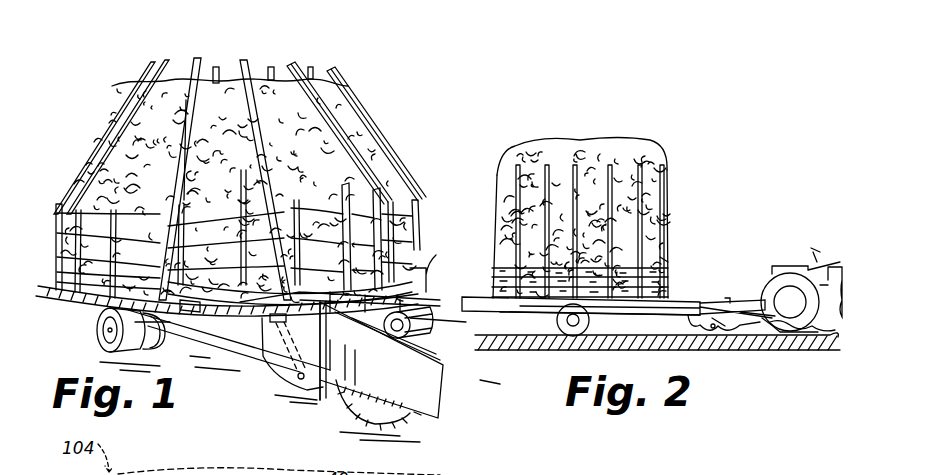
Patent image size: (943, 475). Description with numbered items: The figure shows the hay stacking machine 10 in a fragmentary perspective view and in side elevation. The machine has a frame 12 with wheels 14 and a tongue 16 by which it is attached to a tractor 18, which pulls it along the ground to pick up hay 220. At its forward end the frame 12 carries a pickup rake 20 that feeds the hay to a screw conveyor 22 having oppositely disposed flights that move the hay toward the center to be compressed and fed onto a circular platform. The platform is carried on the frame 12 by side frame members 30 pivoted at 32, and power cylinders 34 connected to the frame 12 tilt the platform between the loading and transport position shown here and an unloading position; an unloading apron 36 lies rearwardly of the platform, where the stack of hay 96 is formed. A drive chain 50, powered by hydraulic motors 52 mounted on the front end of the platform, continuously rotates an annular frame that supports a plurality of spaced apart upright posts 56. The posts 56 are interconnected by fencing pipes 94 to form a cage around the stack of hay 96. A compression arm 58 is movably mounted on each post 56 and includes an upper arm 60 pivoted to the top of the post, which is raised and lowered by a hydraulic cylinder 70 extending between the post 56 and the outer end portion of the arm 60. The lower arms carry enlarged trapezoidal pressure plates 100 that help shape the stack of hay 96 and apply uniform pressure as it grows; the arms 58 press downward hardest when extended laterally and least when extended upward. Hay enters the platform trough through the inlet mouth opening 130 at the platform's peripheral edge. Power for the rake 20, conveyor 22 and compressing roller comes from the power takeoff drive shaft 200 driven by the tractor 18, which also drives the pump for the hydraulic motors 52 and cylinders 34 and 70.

In FIG. 1, the hay stacking machine 10 is at (381, 62).
In FIG. 2, the hay stacking machine 10 is at (679, 152).
In FIG. 1, the frame 12 is at (444, 403).
In FIG. 2, the frame 12 is at (688, 314).
In FIG. 1, the wheels 14 is at (112, 350).
In FIG. 2, the wheels 14 is at (560, 330).
In FIG. 2, the tongue 16 is at (750, 320).
In FIG. 2, the tractor 18 is at (788, 265).
In FIG. 1, the pickup rake 20 is at (405, 422).
In FIG. 2, the pickup rake 20 is at (722, 327).
In FIG. 1, the screw conveyor 22 is at (466, 323).
In FIG. 1, the side frame members 30 is at (222, 332).
In FIG. 2, the side frame members 30 is at (630, 312).
In FIG. 1, the pivot 32 is at (152, 350).
In FIG. 1, the power cylinders 34 is at (280, 367).
In FIG. 2, the unloading apron 36 is at (477, 297).
In FIG. 1, the drive chain 50 is at (77, 297).
In FIG. 1, the hydraulic motors 52 is at (322, 398).
In FIG. 1, the upright posts 56 is at (56, 265).
In FIG. 2, the upright posts 56 is at (492, 272).
In FIG. 1, the compression arms 58 is at (381, 131).
In FIG. 2, the compression arms 58 is at (673, 191).
In FIG. 1, the upper arm 60 is at (245, 62).
In FIG. 2, the upper arm 60 is at (611, 172).
In FIG. 1, the hydraulic cylinder 70 is at (58, 253).
In FIG. 1, the fencing pipes 94 is at (75, 195).
In FIG. 1, the stack of hay 96 is at (236, 76).
In FIG. 2, the stack of hay 96 is at (633, 153).
In FIG. 1, the pressure plates 100 is at (190, 313).
In FIG. 2, the pressure plates 100 is at (650, 255).
In FIG. 1, the inlet mouth opening 130 is at (420, 280).
In FIG. 2, the power takeoff drive shaft 200 is at (747, 300).
In FIG. 2, the hay 220 is at (828, 335).